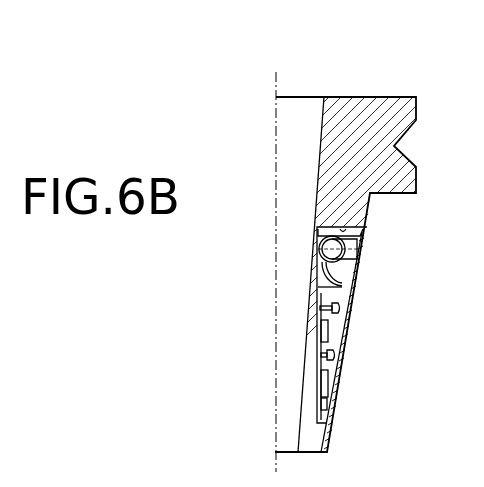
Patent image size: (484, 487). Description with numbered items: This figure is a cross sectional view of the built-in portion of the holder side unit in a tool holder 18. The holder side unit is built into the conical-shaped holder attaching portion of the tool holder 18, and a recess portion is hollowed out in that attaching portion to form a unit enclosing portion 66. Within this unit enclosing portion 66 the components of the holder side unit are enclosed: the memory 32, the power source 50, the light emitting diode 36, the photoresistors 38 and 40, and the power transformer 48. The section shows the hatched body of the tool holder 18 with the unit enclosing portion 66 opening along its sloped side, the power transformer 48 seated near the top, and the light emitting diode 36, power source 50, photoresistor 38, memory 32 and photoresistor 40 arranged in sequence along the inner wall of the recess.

The tool holder 18 is at (350, 97).
The unit enclosing portion 66 is at (340, 231).
The power transformer 48 is at (344, 253).
The light emitting diode 36 is at (342, 308).
The power source 50 is at (321, 333).
The photoresistor 38 is at (337, 354).
The memory 32 is at (321, 381).
The photoresistor 40 is at (327, 403).